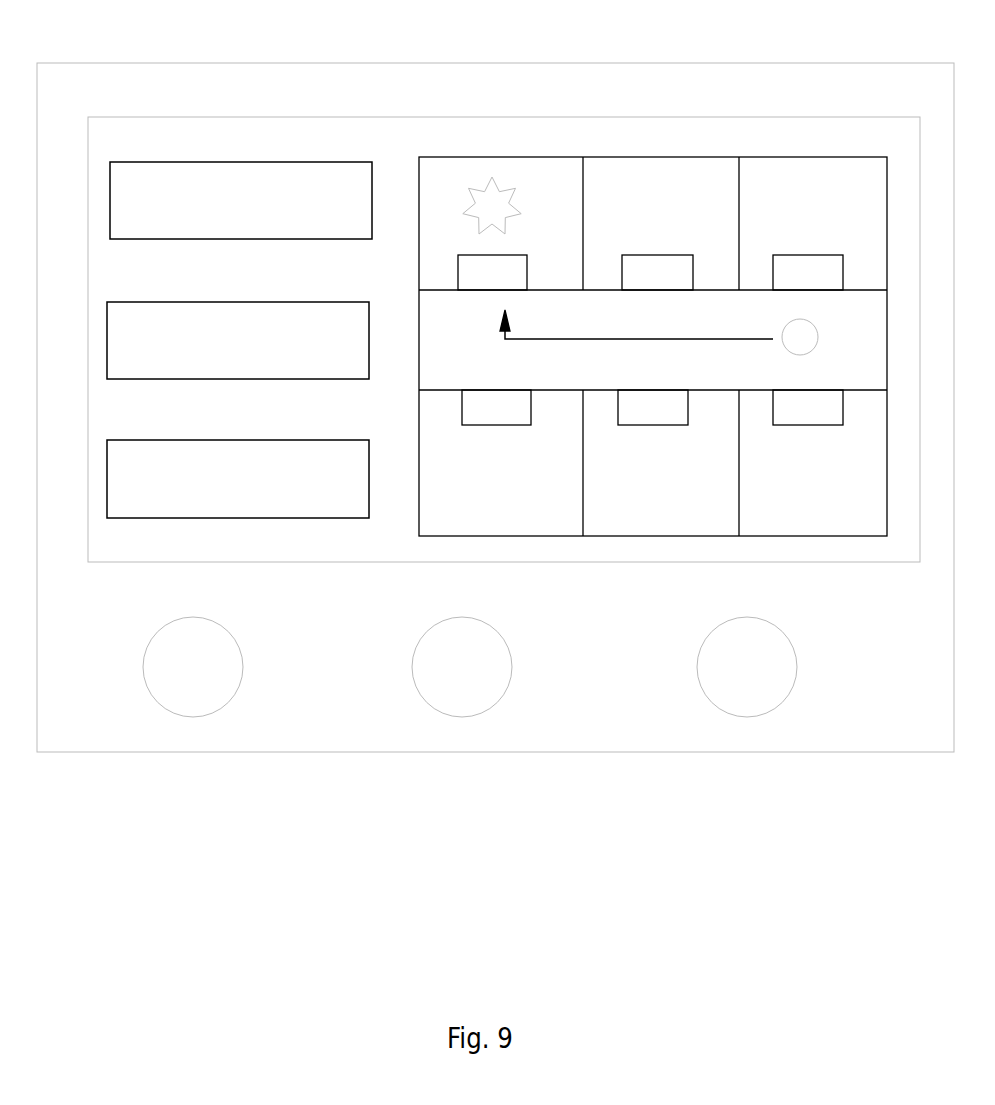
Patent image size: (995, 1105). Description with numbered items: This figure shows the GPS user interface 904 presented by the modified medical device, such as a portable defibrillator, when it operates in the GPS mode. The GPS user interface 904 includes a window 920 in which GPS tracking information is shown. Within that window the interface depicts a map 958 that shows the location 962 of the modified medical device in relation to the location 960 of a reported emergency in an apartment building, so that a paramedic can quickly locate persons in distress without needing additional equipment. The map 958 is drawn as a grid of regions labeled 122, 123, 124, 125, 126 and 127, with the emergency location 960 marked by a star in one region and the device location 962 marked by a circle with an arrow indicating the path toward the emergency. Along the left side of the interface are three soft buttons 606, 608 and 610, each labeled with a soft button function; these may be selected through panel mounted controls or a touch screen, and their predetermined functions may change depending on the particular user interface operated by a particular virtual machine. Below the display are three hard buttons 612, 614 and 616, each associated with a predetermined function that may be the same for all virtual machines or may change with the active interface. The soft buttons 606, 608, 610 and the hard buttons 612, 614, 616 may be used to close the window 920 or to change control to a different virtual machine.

The GPS user interface 904 is at (390, 80).
The window 920 is at (690, 178).
The map 958 is at (838, 186).
The location of a reported emergency 960 is at (493, 190).
The location of the modified medical device 962 is at (808, 334).
The zone 122 is at (492, 272).
The zone 123 is at (496, 407).
The zone 124 is at (657, 272).
The zone 125 is at (653, 407).
The zone 126 is at (808, 272).
The zone 127 is at (808, 407).
The soft button 606 is at (220, 233).
The soft button 608 is at (218, 373).
The soft button 610 is at (218, 511).
The hard button 612 is at (174, 677).
The hard button 614 is at (443, 677).
The hard button 616 is at (728, 677).